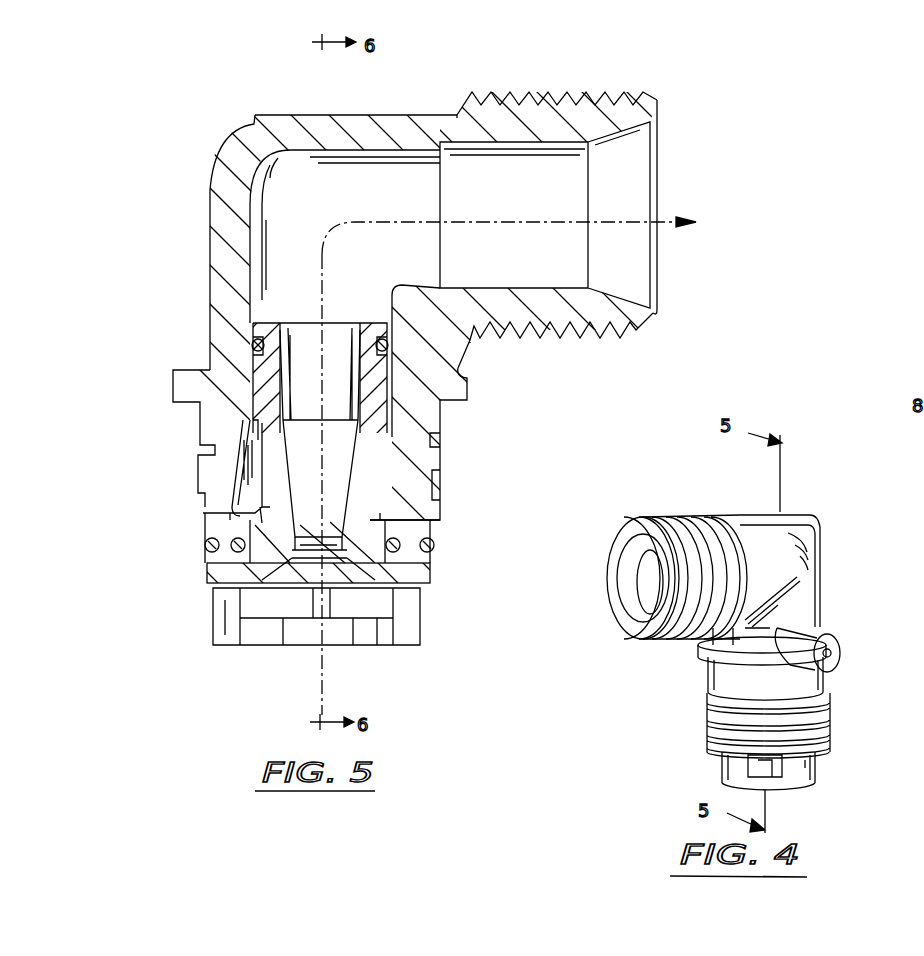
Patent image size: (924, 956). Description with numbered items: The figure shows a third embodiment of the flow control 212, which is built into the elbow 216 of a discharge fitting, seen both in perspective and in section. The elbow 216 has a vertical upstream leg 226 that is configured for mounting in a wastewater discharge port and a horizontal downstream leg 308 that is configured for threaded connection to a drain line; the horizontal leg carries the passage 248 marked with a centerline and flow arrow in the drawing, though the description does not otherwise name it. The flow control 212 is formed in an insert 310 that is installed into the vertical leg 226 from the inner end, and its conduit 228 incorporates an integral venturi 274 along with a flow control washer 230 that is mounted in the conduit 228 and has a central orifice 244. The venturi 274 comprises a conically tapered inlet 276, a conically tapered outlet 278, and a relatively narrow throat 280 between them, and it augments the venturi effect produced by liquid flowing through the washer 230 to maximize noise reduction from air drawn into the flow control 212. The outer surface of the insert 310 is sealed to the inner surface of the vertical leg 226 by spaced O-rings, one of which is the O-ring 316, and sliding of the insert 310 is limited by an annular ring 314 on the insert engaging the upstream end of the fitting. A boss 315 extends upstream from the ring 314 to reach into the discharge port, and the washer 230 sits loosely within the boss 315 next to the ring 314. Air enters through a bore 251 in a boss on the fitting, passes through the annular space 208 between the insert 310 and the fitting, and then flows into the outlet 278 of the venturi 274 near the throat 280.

In FIG. 5, the flow control 212 is at (196, 263).
In FIG. 4, the flow control 212 is at (840, 604).
In FIG. 5, the elbow 216 is at (318, 102).
In FIG. 5, the conduit 228 is at (256, 236).
In FIG. 5, the flow passage 248 is at (487, 222).
In FIG. 4, the flow passage 248 is at (657, 579).
In FIG. 5, the horizontal downstream leg 308 is at (360, 127).
In FIG. 4, the horizontal downstream leg 308 is at (790, 530).
In FIG. 5, the annular space 208 is at (387, 445).
In FIG. 5, the vertical upstream leg 226 is at (440, 423).
In FIG. 4, the vertical upstream leg 226 is at (710, 675).
In FIG. 5, the venturi 274 is at (262, 392).
In FIG. 5, the conically tapered outlet 278 is at (347, 477).
In FIG. 5, the throat 280 is at (335, 530).
In FIG. 5, the insert 310 is at (252, 525).
In FIG. 5, the O-ring 316 is at (240, 547).
In FIG. 5, the annular ring 314 is at (250, 343).
In FIG. 5, the conically tapered inlet 276 is at (245, 602).
In FIG. 5, the flow control washer 230 is at (378, 605).
In FIG. 5, the central orifice 244 is at (327, 625).
In FIG. 4, the bore 251 is at (845, 648).
In FIG. 4, the boss 315 is at (818, 762).